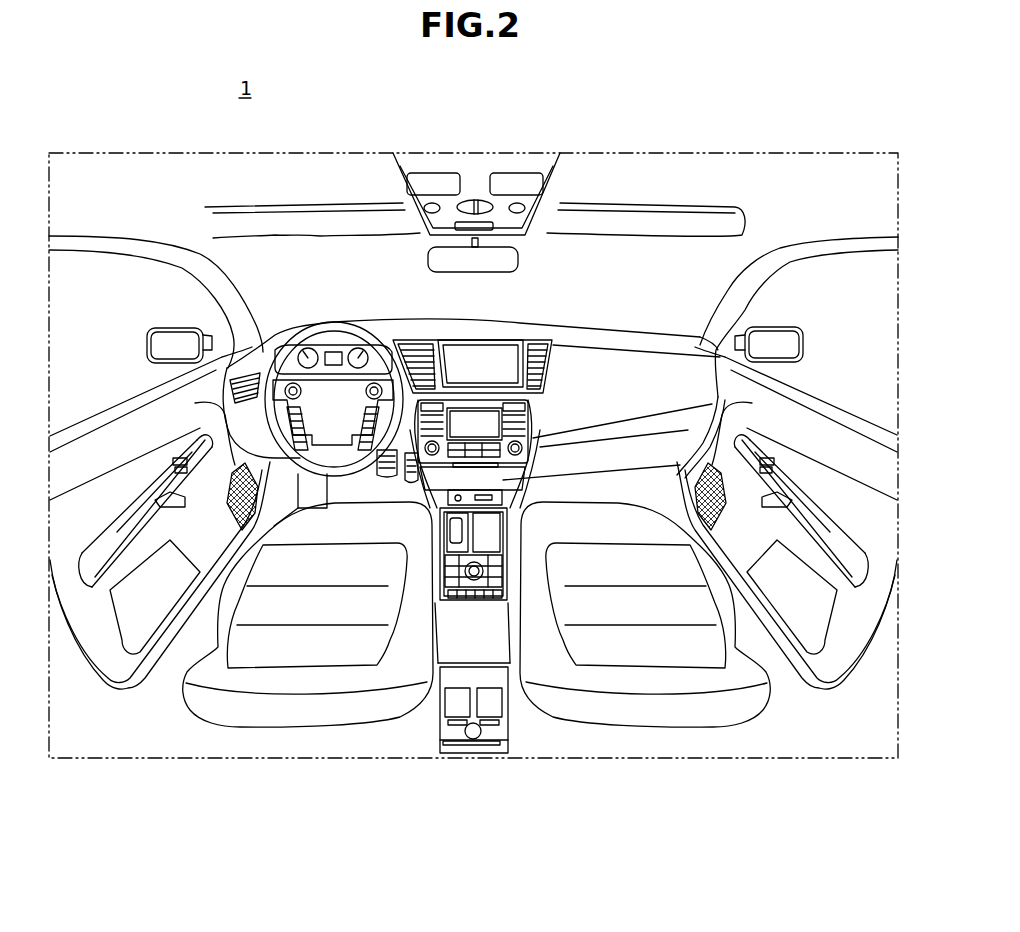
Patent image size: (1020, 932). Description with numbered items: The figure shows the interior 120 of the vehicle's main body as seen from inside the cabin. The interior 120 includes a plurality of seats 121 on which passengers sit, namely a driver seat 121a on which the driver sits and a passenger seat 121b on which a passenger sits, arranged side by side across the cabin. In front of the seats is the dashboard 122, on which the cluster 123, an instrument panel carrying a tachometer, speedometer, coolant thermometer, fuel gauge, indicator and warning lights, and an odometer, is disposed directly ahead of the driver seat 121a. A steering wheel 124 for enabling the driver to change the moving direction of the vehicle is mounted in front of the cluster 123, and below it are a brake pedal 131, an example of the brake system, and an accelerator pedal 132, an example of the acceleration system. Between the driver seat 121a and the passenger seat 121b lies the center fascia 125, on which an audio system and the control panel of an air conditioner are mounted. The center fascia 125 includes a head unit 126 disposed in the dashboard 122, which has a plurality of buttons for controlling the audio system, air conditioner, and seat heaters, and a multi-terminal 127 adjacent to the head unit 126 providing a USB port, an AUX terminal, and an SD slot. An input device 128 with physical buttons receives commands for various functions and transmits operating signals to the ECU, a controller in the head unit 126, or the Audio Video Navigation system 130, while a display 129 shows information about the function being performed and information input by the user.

The interior 120 is at (651, 187).
The seats 121 is at (674, 813).
The driver seat 121a is at (293, 713).
The passenger seat 121b is at (661, 713).
The dashboard 122 is at (648, 362).
The cluster 123 is at (313, 338).
The steering wheel 124 is at (344, 320).
The center fascia 125 is at (490, 474).
The head unit 126 is at (535, 437).
The multi-terminal 127 is at (500, 499).
The input device 128 is at (511, 548).
The display 129 is at (473, 417).
The Audio Video Navigation (AVN) system 130 is at (503, 337).
The brake pedal 131 is at (378, 480).
The accelerator pedal 132 is at (412, 487).